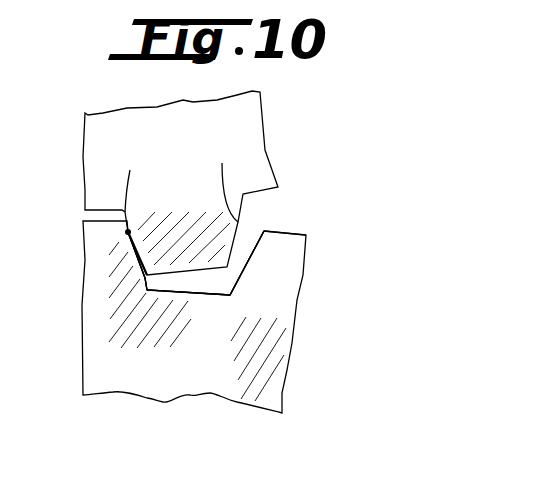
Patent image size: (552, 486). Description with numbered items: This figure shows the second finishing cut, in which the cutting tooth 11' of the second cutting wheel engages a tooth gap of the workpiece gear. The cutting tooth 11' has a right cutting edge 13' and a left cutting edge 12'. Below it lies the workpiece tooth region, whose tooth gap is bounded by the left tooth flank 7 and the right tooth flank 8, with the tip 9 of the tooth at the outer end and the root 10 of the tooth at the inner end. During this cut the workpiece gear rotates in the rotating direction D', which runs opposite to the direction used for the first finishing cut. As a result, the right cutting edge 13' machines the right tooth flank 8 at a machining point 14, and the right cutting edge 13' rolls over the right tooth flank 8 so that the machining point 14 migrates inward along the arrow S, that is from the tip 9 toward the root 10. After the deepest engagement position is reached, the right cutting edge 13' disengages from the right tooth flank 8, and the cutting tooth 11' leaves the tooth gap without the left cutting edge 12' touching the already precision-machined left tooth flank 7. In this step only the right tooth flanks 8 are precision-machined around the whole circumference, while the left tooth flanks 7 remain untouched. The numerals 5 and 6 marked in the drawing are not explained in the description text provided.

The second body (workpiece with groove) 5 is at (283, 293).
The groove 6 is at (284, 210).
The left tooth flank 7 is at (260, 253).
The right tooth flank 8 is at (145, 278).
The tip of the tooth 9 is at (292, 233).
The root of the tooth 10 is at (207, 296).
The machining point 14 is at (125, 232).
The cutting tooth 11' is at (180, 183).
The left cutting edge 12' is at (227, 176).
The right cutting edge 13' is at (161, 174).
The arrow S is at (119, 239).
The rotating direction D' is at (185, 436).